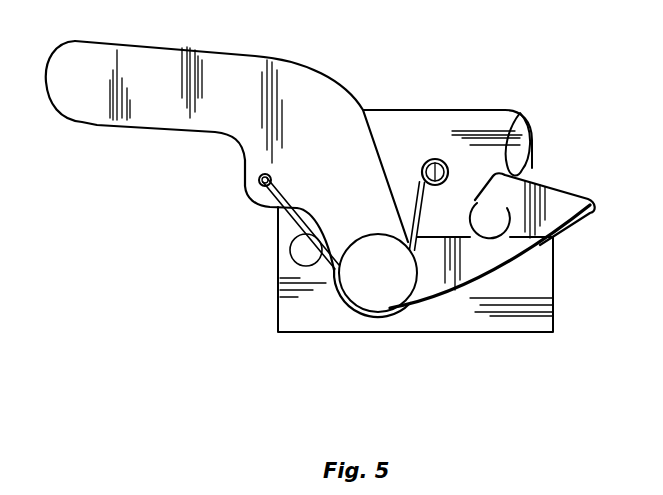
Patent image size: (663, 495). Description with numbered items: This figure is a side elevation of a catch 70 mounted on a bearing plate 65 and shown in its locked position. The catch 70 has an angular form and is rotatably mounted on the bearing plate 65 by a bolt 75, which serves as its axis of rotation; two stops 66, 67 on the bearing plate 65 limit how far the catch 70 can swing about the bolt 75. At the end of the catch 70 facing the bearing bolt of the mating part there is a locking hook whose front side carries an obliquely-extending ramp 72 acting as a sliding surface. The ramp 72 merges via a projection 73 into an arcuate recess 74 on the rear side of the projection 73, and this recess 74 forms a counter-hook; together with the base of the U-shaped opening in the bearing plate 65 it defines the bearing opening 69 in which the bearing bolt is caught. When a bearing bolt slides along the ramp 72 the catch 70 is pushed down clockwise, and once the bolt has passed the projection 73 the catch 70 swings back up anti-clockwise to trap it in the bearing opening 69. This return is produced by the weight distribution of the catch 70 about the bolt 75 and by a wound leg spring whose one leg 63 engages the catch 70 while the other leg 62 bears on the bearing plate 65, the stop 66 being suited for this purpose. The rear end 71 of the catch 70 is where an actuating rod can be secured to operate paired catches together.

The leg 62 is at (418, 190).
The leg 63 is at (292, 220).
The bearing plate 65 is at (487, 120).
The stop 66 is at (436, 160).
The stop 67 is at (300, 253).
The bearing opening 69 is at (490, 217).
The catch 70 is at (342, 174).
The rear end 71 is at (92, 103).
The ramp 72 is at (568, 188).
The projection 73 is at (518, 120).
The arcuate recess 74 is at (498, 210).
The bolt 75 is at (388, 277).